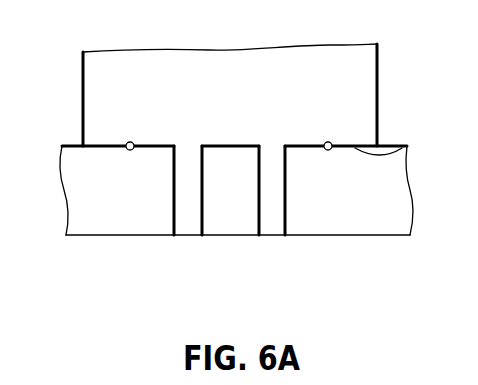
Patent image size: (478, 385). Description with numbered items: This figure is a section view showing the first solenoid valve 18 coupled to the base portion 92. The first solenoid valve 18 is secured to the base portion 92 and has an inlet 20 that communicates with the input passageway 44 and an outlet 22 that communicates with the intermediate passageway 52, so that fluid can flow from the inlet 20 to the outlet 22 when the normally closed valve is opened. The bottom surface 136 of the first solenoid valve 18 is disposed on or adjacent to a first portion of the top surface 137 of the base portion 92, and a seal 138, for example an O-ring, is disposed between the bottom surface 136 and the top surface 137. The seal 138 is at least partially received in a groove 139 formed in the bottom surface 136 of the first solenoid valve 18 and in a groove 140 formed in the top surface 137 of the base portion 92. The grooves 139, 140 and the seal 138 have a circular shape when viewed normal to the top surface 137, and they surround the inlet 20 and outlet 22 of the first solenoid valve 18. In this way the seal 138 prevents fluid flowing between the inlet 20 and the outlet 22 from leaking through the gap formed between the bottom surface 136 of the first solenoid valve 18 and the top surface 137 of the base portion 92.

The first solenoid valve 18 is at (379, 52).
The inlet 20 is at (185, 145).
The outlet 22 is at (275, 142).
The input passageway 44 is at (188, 220).
The intermediate passageway 52 is at (275, 219).
The base portion 92 is at (364, 220).
The bottom surface 136 is at (401, 148).
The top surface 137 is at (77, 146).
The seal 138 is at (332, 150).
The groove 139 is at (128, 142).
The groove 140 is at (131, 150).